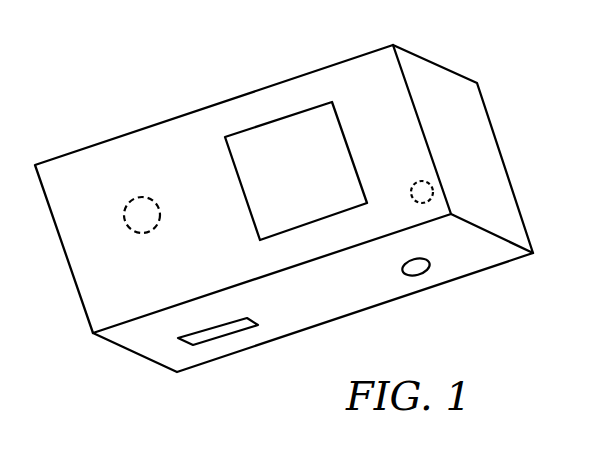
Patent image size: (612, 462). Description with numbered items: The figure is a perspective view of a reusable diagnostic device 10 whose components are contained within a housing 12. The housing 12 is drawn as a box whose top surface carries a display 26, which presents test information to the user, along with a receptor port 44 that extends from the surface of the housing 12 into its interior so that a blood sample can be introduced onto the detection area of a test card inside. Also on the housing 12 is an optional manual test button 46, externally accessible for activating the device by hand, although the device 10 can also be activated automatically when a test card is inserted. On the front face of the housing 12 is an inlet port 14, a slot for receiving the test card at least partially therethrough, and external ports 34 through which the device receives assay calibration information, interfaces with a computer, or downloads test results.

The diagnostic device 10 is at (497, 36).
The housing 12 is at (284, 197).
The inlet port 14 is at (238, 354).
The display 26 is at (278, 144).
The external ports 34 is at (453, 288).
The receptor port 44 is at (116, 202).
The manual test button 46 is at (484, 162).